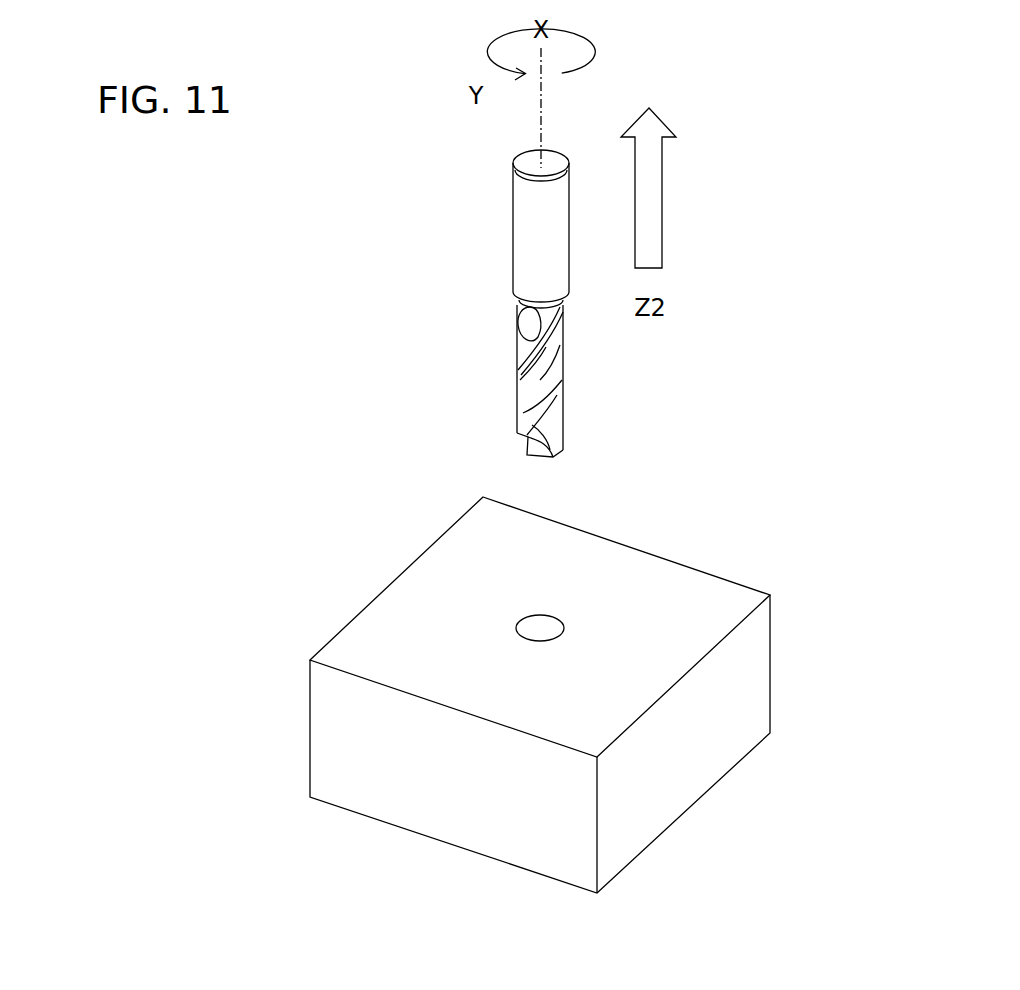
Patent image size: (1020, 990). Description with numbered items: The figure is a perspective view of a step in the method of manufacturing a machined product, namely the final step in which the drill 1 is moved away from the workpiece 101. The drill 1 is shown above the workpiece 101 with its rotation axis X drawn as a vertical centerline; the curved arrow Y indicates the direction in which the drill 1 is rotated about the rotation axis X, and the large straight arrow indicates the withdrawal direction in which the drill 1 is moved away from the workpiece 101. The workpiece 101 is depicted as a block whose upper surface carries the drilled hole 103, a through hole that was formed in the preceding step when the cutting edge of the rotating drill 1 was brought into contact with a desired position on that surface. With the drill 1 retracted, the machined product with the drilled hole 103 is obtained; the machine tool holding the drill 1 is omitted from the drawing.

The drill 1 is at (530, 278).
The workpiece 101 is at (417, 618).
The drilled hole 103 is at (542, 627).